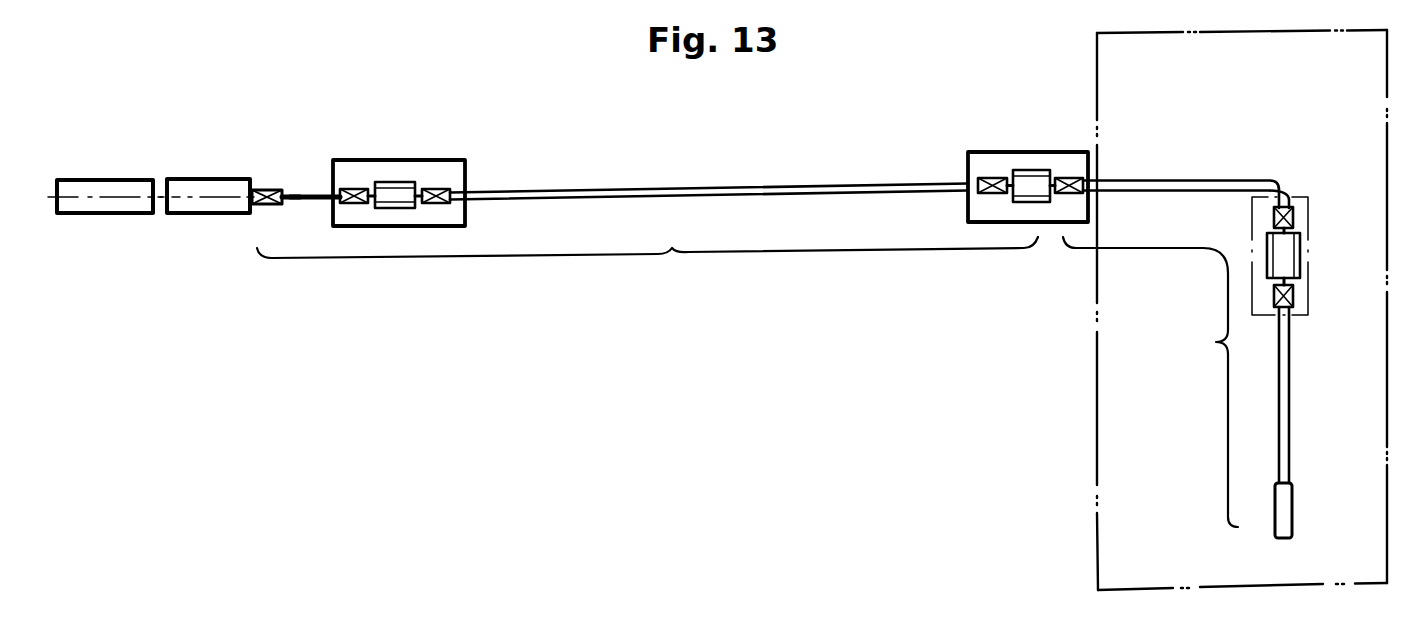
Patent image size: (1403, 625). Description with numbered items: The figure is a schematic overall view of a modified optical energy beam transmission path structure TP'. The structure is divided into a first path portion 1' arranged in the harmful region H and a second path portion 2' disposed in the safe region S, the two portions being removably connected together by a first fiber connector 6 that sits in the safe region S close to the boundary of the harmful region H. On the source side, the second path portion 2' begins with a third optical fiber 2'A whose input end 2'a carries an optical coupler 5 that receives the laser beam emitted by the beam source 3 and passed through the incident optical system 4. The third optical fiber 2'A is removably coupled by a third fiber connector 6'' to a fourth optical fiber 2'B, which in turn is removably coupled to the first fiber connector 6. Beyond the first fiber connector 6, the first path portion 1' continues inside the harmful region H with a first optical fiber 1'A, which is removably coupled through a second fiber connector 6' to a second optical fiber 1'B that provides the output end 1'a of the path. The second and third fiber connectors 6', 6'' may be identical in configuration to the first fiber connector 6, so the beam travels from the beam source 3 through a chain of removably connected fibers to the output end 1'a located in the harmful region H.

The beam source 3 is at (113, 178).
The incident optical system 4 is at (211, 178).
The optical coupler 5 is at (275, 188).
The third optical fiber 2'A is at (317, 156).
The input end 2'a is at (307, 228).
The third fiber connector 6'' is at (399, 166).
The fourth optical fiber 2'B is at (709, 155).
The second path portion 2' is at (647, 270).
The optical energy beam transmission path structure TP' is at (898, 105).
The safe region S is at (598, 374).
The first fiber connector 6 is at (1028, 154).
The first optical fiber 1'A is at (1186, 151).
The second fiber connector 6' is at (1302, 233).
The first path portion 1' is at (1150, 382).
The second optical fiber 1'B is at (1322, 395).
The output end 1'a is at (1253, 533).
The harmful region H is at (1096, 435).